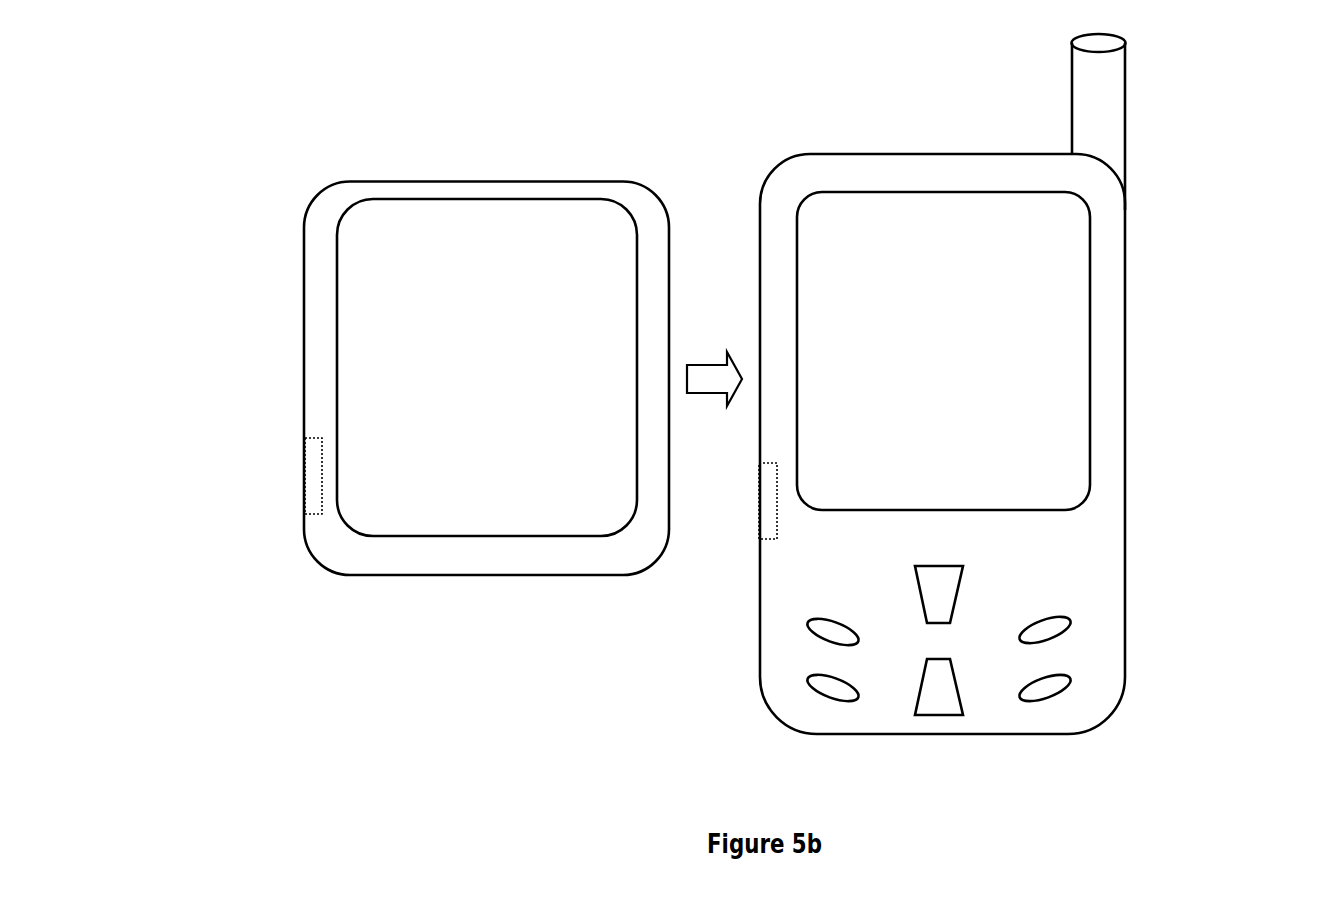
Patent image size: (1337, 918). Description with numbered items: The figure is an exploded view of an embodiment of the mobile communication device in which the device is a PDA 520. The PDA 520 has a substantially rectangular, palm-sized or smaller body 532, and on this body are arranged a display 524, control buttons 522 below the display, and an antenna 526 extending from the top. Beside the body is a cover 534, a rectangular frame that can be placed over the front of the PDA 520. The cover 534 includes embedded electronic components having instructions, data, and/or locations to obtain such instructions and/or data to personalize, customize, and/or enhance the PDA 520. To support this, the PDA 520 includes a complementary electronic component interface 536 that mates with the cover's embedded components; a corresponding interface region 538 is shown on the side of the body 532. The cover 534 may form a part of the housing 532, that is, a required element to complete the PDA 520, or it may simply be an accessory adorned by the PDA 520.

The PDA 520 is at (320, 140).
The control buttons 522 is at (1050, 687).
The display 524 is at (1072, 221).
The antenna 526 is at (1108, 93).
The body 532 is at (1106, 518).
The cover 534 is at (323, 293).
The complementary electronic component interface 536 is at (315, 480).
The device connector 538 is at (768, 508).